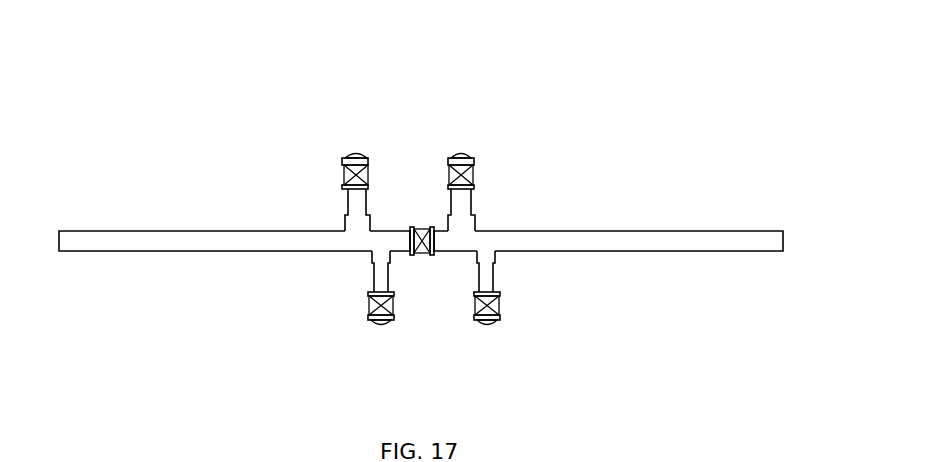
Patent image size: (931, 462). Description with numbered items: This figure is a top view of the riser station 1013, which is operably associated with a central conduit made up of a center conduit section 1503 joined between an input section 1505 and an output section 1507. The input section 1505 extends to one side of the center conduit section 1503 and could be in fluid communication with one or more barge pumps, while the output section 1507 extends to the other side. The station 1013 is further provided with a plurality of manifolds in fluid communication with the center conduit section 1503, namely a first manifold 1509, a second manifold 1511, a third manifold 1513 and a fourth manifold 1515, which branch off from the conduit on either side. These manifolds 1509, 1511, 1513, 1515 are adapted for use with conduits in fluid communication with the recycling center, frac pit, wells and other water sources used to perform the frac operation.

The riser station 1013 is at (213, 86).
The center conduit section 1503 is at (441, 227).
The input section 1505 is at (222, 230).
The output section 1507 is at (613, 230).
The manifold 1509 is at (343, 170).
The manifold 1511 is at (368, 300).
The manifold 1513 is at (477, 177).
The manifold 1515 is at (500, 300).